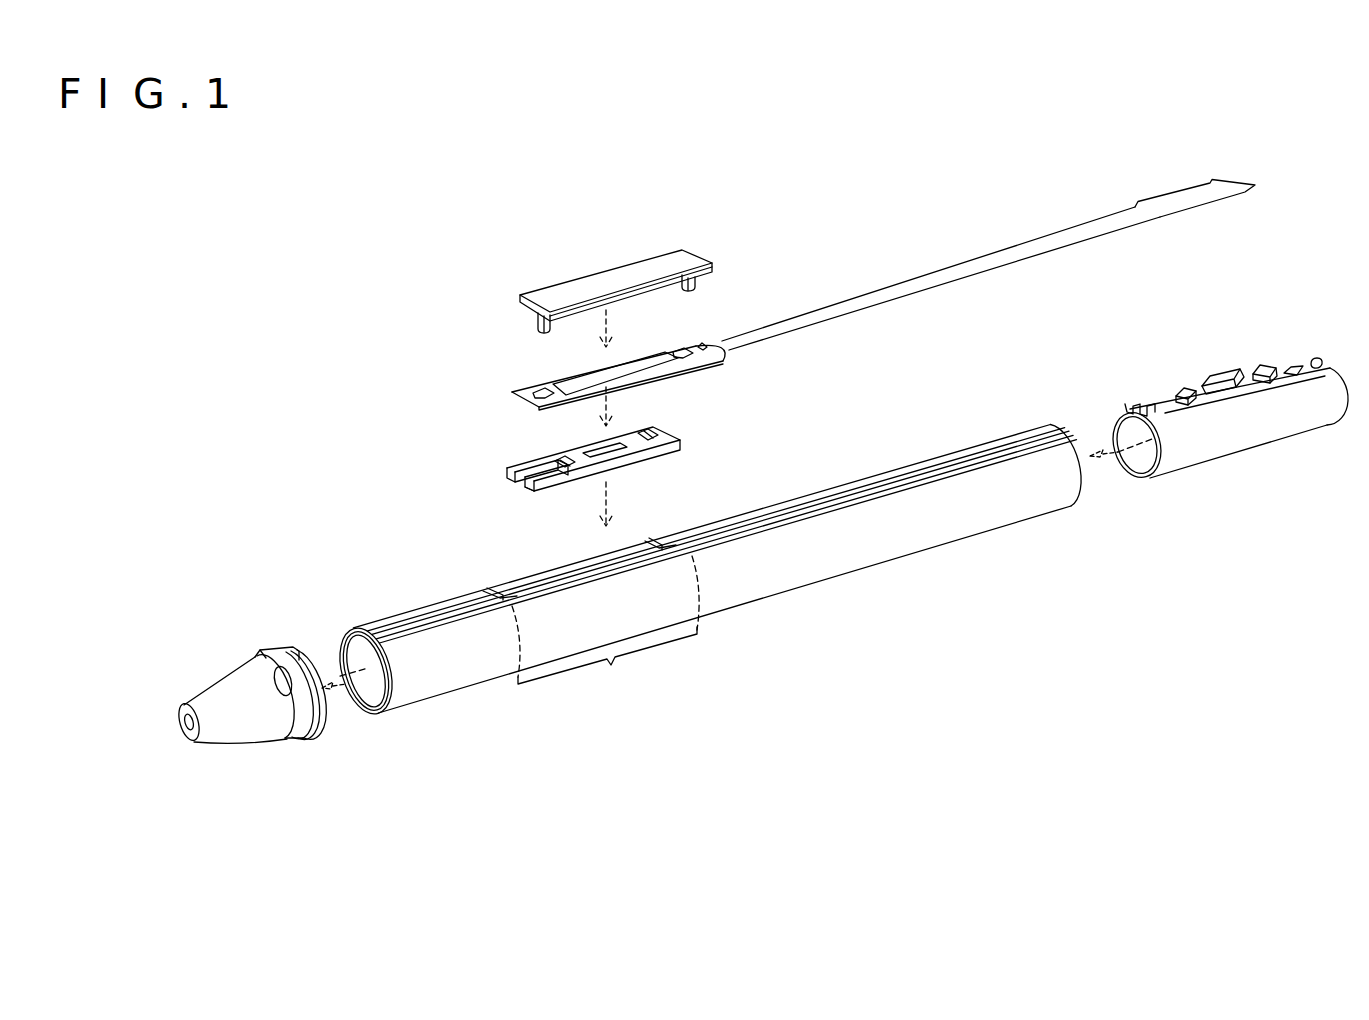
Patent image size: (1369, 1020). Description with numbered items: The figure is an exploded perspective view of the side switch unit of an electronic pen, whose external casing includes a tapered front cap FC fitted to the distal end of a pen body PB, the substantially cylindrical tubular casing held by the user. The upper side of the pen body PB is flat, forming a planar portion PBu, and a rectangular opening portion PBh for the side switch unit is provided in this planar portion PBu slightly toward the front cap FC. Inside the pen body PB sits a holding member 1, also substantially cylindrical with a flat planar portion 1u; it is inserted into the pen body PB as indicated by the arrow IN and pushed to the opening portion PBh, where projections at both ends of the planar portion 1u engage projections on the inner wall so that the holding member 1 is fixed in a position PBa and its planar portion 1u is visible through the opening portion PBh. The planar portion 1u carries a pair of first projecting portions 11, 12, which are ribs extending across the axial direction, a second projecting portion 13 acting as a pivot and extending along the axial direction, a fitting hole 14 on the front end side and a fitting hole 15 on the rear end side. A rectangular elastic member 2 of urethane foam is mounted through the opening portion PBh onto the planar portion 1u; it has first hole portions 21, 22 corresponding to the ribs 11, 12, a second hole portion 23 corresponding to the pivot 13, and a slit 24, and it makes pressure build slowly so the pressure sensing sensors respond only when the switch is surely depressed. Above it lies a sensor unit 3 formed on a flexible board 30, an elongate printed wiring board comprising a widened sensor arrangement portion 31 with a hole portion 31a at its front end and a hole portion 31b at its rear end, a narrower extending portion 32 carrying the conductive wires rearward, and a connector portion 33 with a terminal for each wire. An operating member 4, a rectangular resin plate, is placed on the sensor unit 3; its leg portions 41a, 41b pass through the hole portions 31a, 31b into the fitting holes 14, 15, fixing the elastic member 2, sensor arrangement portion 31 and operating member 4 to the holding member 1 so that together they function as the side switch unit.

The holding member 1 is at (1227, 378).
The planar portion 1u is at (1245, 383).
The first projecting portion (rib) 11 is at (1180, 387).
The first projecting portion (rib) 12 is at (1265, 363).
The second projecting portion (pivot) 13 is at (1225, 377).
The fitting hole 14 is at (1157, 403).
The fitting hole 15 is at (1303, 360).
The elastic member 2 is at (585, 452).
The first hole portion 21 is at (575, 452).
The first hole portion 22 is at (648, 433).
The second hole portion 23 is at (598, 450).
The slit 24 is at (527, 482).
The sensor unit 3 is at (642, 360).
The flexible board 30 is at (872, 270).
The sensor arrangement portion 31 is at (616, 353).
The hole portion 31a is at (547, 385).
The hole portion 31b is at (680, 347).
The extending portion 32 is at (1007, 255).
The connector portion 33 is at (1230, 188).
The operating member 4 is at (620, 277).
The leg portion 41a is at (537, 320).
The leg portion 41b is at (695, 280).
The pen body PB is at (767, 590).
The planar portion PBu is at (787, 508).
The opening portion PBh is at (575, 582).
The position PBa is at (605, 629).
The front cap FC is at (242, 738).
The arrow IN is at (1112, 453).